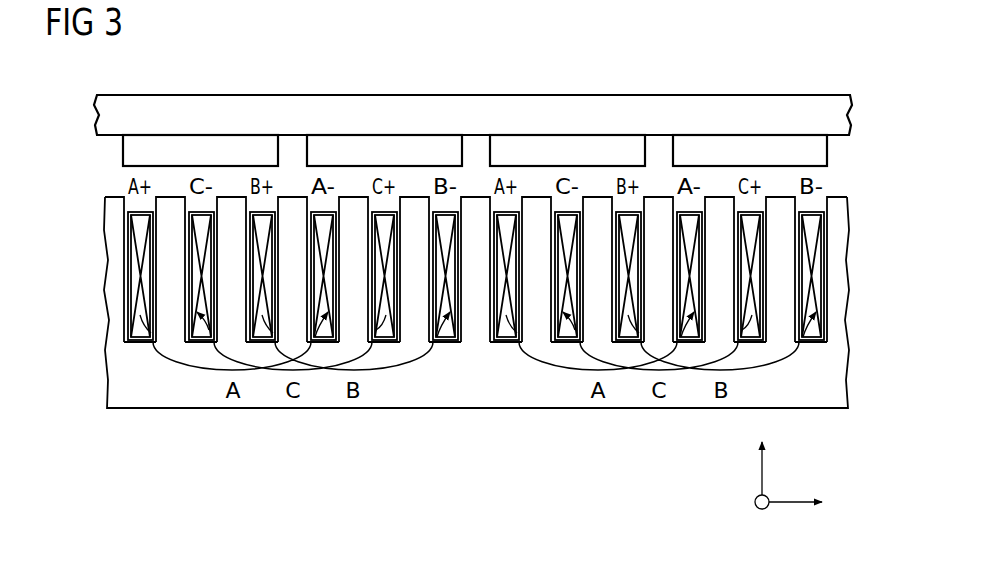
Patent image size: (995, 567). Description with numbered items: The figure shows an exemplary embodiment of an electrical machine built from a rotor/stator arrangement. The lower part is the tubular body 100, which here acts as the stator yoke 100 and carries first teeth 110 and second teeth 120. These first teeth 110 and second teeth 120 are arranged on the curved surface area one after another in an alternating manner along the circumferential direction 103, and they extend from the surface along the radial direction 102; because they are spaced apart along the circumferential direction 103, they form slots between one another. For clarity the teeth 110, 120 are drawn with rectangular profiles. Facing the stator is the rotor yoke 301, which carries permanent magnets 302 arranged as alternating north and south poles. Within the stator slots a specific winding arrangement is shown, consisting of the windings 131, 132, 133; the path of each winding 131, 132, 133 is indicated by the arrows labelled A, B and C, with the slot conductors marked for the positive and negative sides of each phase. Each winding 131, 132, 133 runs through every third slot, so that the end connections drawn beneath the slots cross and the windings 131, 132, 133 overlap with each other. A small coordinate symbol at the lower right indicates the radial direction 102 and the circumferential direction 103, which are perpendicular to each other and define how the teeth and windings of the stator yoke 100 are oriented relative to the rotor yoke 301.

The tubular body 100 is at (447, 329).
The first teeth 110 is at (113, 252).
The second teeth 120 is at (228, 298).
The winding 131 is at (140, 328).
The winding 132 is at (260, 328).
The winding 133 is at (198, 328).
The rotor yoke 301 is at (475, 108).
The permanent magnets 302 is at (338, 147).
The radial direction 102 is at (762, 470).
The circumferential direction 103 is at (795, 503).